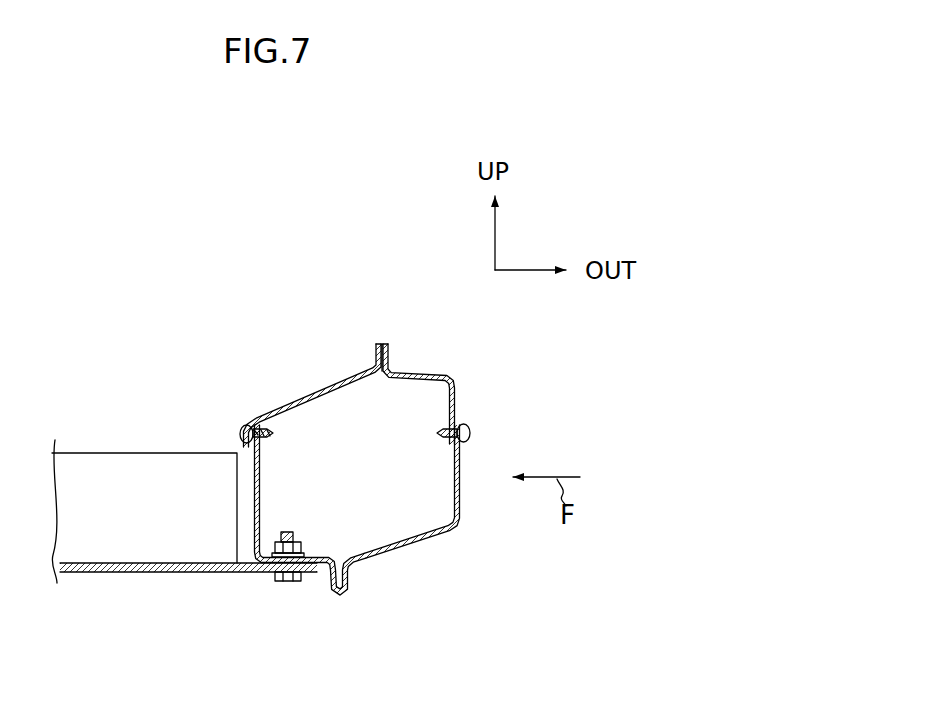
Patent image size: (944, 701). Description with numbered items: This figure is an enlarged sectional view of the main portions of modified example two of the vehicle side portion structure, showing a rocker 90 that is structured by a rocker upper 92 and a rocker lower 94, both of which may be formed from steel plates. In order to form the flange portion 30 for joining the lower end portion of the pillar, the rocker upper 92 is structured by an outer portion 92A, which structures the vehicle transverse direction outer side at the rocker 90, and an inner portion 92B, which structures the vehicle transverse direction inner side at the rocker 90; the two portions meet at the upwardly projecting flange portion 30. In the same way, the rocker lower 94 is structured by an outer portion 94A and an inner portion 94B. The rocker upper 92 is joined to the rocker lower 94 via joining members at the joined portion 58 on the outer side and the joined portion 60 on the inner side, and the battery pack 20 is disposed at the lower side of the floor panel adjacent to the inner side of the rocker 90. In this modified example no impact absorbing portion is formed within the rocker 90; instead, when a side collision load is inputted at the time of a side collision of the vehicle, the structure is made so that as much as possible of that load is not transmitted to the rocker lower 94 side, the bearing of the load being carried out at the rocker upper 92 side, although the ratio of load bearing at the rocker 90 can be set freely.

The battery pack 20 is at (97, 463).
The flange portion 30 is at (389, 351).
The joined portion 58 is at (488, 437).
The joined portion 60 is at (226, 434).
The rocker 90 is at (506, 361).
The rocker upper 92 is at (324, 366).
The outer portion 92A is at (416, 373).
The inner portion 92B is at (290, 407).
The rocker lower 94 is at (418, 563).
The outer portion 94A is at (441, 540).
The inner portion 94B is at (320, 575).